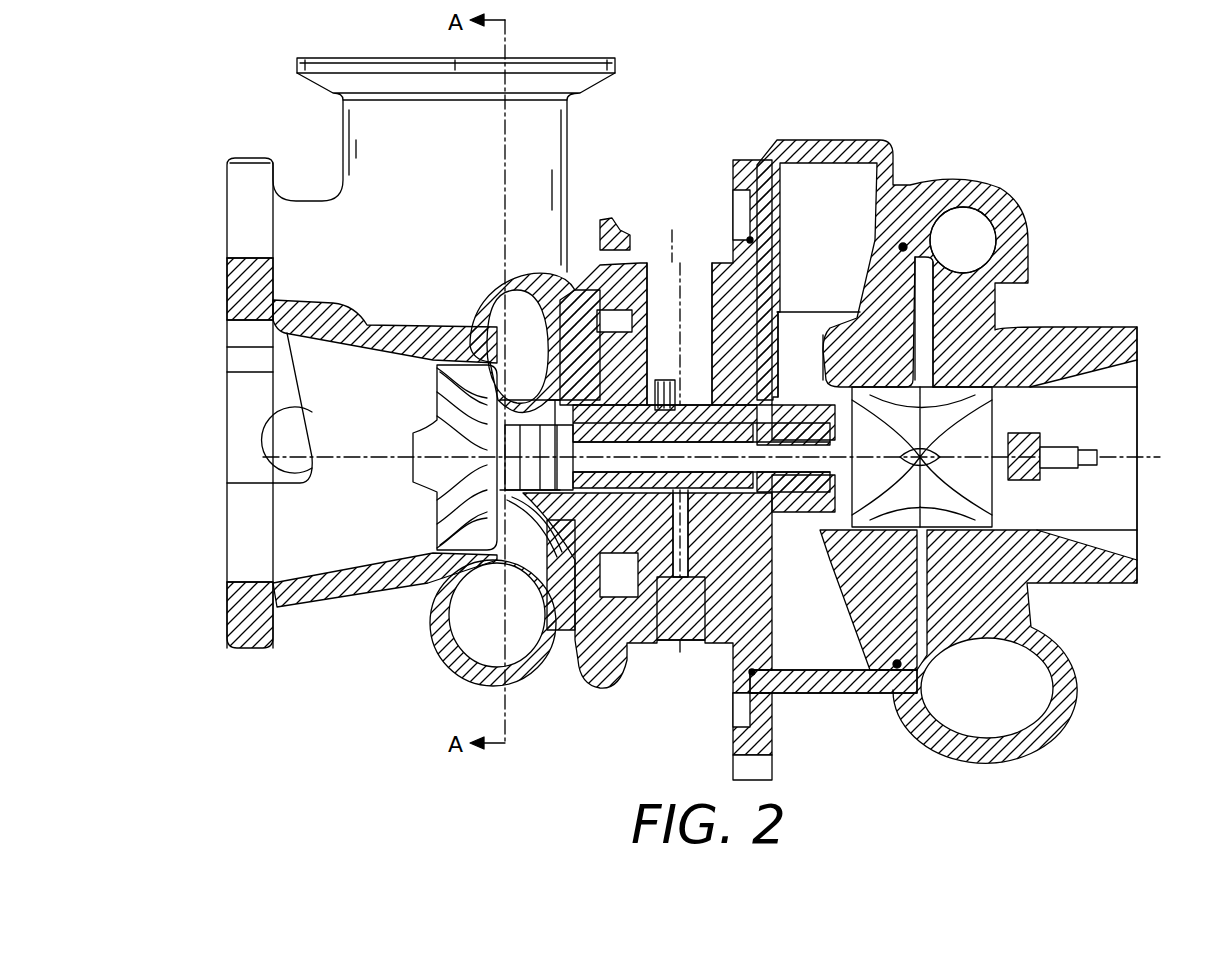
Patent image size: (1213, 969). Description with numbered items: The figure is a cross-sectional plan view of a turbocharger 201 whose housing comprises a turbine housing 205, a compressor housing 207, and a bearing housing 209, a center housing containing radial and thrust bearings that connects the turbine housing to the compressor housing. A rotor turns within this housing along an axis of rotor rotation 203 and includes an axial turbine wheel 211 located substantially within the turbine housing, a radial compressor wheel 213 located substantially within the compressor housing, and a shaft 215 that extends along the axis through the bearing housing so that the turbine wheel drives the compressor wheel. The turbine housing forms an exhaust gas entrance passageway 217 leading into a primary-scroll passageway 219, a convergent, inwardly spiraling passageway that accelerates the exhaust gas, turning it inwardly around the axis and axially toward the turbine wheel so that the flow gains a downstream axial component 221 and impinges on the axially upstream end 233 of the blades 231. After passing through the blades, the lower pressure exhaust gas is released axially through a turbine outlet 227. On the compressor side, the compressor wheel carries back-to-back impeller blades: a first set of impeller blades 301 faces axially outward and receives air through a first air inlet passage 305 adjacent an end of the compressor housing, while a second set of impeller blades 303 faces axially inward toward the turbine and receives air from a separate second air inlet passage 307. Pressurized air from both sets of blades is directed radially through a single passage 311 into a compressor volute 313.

The turbocharger 201 is at (1100, 121).
The axis of rotor rotation 203 is at (1113, 455).
The turbine housing 205 is at (378, 580).
The compressor housing 207 is at (1090, 575).
The bearing housing 209 is at (720, 600).
The axial turbine wheel 211 is at (425, 440).
The radial compressor wheel 213 is at (1000, 470).
The shaft 215 is at (610, 445).
The exhaust gas entrance passageway 217 is at (378, 118).
The primary-scroll passageway 219 is at (487, 648).
The downstream axial component 221 is at (494, 523).
The turbine outlet 227 is at (300, 533).
The blades 231 is at (440, 514).
The axially upstream end 233 is at (510, 395).
The first set of impeller blades 301 is at (990, 414).
The second set of impeller blades 303 is at (812, 405).
The first air inlet passage 305 is at (1135, 474).
The second air inlet passage 307 is at (828, 680).
The single passage 311 is at (918, 290).
The compressor volute 313 is at (985, 240).